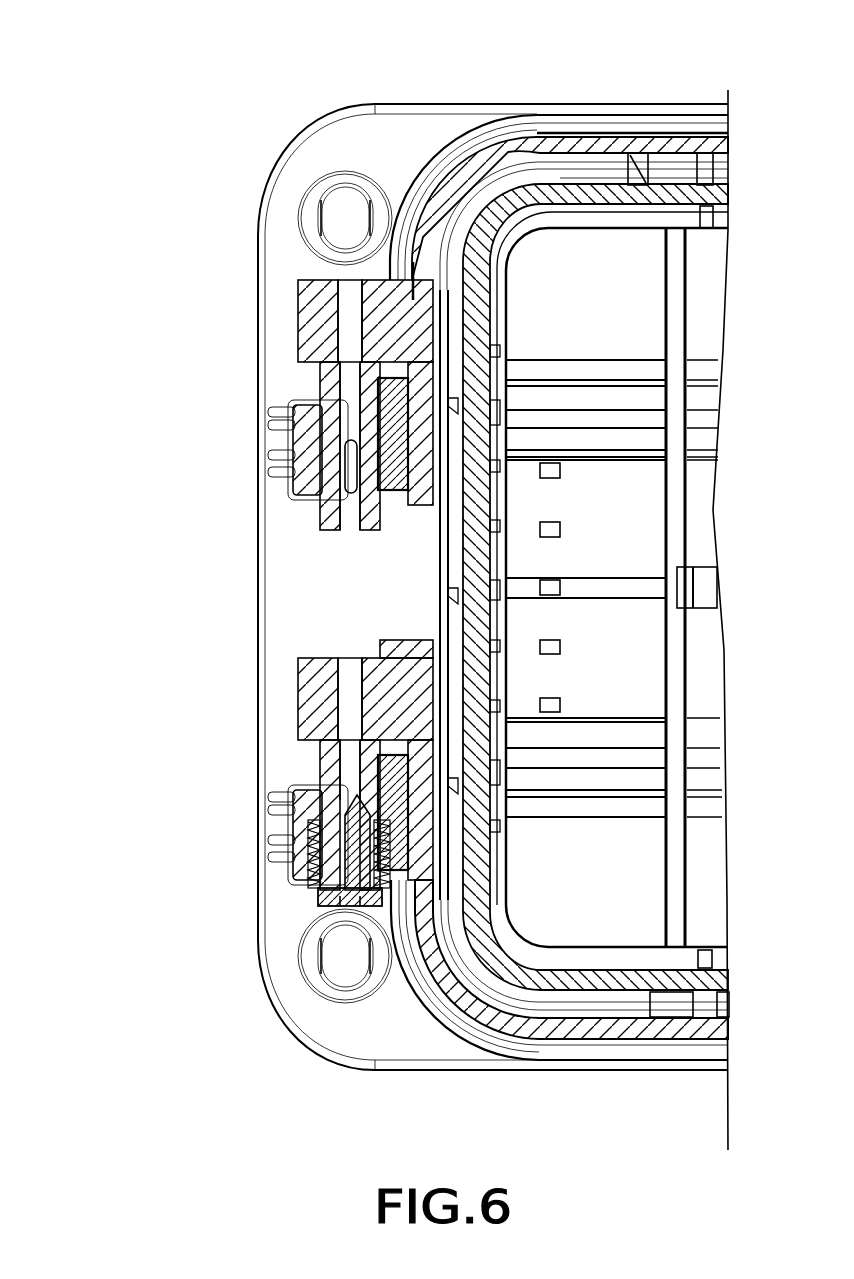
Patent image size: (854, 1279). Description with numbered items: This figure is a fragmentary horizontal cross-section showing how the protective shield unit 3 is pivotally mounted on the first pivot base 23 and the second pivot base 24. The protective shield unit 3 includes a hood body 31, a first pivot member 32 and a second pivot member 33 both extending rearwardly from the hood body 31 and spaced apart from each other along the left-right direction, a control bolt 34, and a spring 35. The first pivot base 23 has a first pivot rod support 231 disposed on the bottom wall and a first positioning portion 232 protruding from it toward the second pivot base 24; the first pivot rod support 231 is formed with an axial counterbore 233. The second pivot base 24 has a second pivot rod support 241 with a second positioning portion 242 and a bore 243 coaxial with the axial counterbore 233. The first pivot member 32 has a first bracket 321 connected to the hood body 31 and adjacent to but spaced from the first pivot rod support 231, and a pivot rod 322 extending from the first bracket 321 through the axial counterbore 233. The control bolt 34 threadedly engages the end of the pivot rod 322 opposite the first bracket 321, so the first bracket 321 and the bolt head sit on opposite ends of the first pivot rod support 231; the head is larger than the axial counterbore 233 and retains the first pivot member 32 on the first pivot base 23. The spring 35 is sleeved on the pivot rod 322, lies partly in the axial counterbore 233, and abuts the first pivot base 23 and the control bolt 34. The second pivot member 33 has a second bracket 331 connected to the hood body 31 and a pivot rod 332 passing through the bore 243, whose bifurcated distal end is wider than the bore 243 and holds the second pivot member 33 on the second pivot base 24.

The protective shield unit 3 is at (645, 124).
The hood body 31 is at (582, 145).
The first pivot member 32 is at (370, 759).
The first bracket 321 is at (383, 662).
The pivot rod 322 is at (370, 802).
The second pivot member 33 is at (300, 373).
The second bracket 331 is at (387, 290).
The pivot rod 332 is at (327, 503).
The control bolt 34 is at (318, 888).
The spring 35 is at (388, 857).
The first pivot base 23 is at (242, 840).
The first pivot rod support 231 is at (300, 870).
The first positioning portion 232 is at (350, 760).
The axial counterbore 233 is at (300, 790).
The second pivot base 24 is at (245, 452).
The second pivot rod support 241 is at (293, 463).
The second positioning portion 242 is at (323, 402).
The bore 243 is at (380, 393).